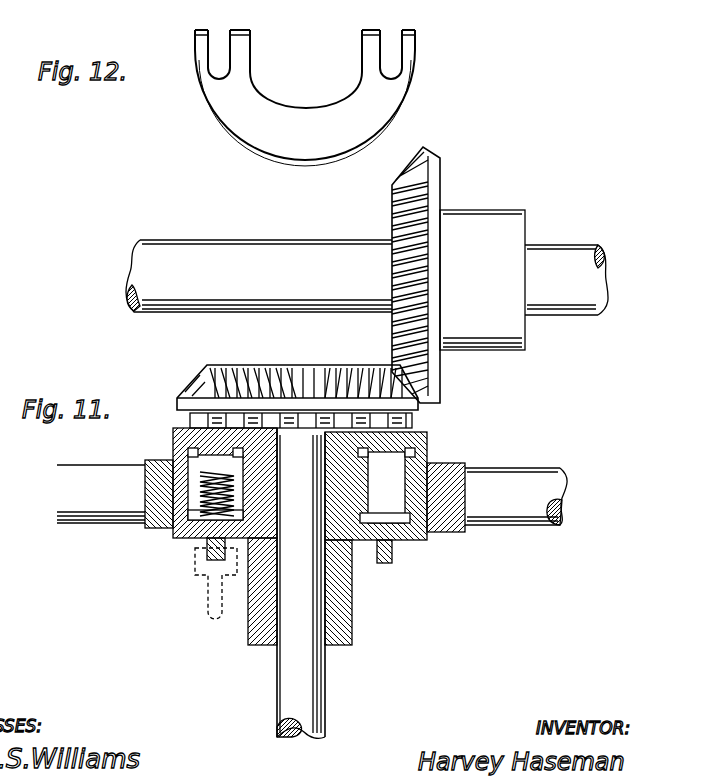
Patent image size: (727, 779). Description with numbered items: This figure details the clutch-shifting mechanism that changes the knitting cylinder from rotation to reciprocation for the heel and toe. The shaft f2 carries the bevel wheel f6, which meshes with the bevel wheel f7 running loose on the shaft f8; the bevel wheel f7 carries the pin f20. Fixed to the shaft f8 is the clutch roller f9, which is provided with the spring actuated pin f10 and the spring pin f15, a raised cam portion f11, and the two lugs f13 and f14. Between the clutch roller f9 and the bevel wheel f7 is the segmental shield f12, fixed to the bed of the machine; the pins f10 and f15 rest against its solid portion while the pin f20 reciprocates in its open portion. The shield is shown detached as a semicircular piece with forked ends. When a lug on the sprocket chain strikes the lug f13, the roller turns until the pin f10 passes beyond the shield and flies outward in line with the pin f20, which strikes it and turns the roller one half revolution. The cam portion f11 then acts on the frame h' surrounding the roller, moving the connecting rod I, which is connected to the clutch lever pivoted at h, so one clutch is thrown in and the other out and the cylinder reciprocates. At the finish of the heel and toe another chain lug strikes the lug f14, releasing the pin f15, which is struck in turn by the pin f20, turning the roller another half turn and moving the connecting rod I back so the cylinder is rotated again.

In FIG. 11, the shaft f2 is at (243, 244).
In FIG. 11, the bevel wheel f6 is at (427, 190).
In FIG. 11, the bevel wheel f7 is at (264, 354).
In FIG. 11, the shaft f8 is at (280, 679).
In FIG. 11, the clutch roller f9 is at (414, 542).
In FIG. 11, the spring actuated pin f10 is at (200, 434).
In FIG. 11, the cam portion f11 is at (438, 536).
In FIG. 12, the segmental shield f12 is at (318, 118).
In FIG. 11, the segmental shield f12 is at (413, 422).
In FIG. 11, the lug f13 is at (206, 560).
In FIG. 11, the lug f14 is at (386, 564).
In FIG. 11, the spring pin f15 is at (430, 452).
In FIG. 11, the pin f20 is at (306, 432).
In FIG. 11, the pivot of clutch lever h is at (152, 528).
In FIG. 11, the connecting rod I is at (535, 480).